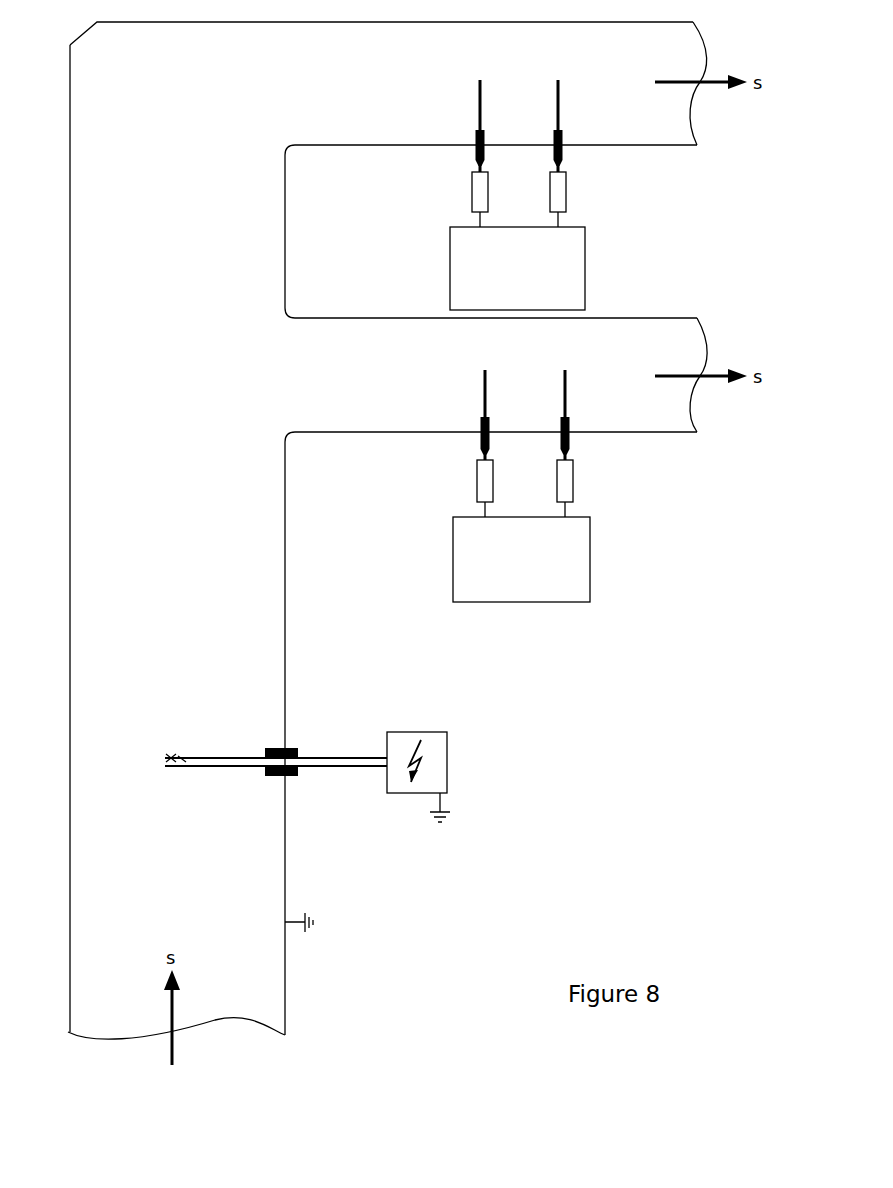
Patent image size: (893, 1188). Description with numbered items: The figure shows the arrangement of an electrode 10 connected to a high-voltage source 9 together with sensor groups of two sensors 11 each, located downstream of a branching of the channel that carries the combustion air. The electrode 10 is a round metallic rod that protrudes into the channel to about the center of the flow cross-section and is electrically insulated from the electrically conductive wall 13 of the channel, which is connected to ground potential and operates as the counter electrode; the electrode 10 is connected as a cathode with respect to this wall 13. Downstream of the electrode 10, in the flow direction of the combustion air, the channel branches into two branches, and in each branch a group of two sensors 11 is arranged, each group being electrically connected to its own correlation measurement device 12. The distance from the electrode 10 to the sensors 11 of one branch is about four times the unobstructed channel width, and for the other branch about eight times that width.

The high-voltage source 9 is at (437, 746).
The electrode 10 is at (215, 758).
The sensors 11 is at (480, 100).
The correlation measurement device 12 is at (573, 270).
The wall of the channel 13 is at (285, 575).